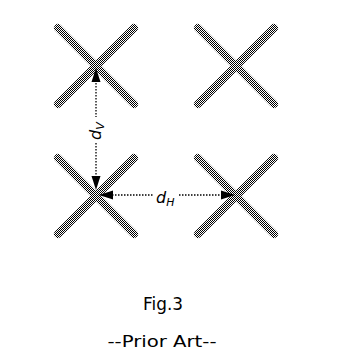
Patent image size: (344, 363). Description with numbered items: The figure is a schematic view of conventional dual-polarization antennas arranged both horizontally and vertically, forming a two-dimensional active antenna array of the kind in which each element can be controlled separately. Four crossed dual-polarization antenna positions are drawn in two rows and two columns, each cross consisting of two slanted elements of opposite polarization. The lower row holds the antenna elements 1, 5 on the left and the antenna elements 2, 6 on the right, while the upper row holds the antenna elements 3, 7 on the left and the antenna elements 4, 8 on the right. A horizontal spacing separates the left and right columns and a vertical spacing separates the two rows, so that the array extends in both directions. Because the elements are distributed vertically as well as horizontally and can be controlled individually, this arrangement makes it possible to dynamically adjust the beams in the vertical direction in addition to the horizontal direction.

The antenna element 1 is at (91, 211).
The antenna element 2 is at (231, 212).
The antenna element 3 is at (92, 83).
The antenna element 4 is at (231, 82).
The antenna element 5 is at (99, 211).
The antenna element 6 is at (239, 212).
The antenna element 7 is at (100, 82).
The antenna element 8 is at (239, 82).